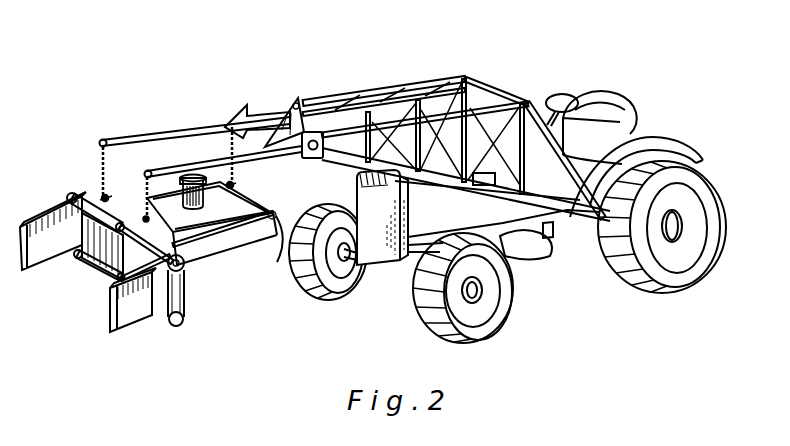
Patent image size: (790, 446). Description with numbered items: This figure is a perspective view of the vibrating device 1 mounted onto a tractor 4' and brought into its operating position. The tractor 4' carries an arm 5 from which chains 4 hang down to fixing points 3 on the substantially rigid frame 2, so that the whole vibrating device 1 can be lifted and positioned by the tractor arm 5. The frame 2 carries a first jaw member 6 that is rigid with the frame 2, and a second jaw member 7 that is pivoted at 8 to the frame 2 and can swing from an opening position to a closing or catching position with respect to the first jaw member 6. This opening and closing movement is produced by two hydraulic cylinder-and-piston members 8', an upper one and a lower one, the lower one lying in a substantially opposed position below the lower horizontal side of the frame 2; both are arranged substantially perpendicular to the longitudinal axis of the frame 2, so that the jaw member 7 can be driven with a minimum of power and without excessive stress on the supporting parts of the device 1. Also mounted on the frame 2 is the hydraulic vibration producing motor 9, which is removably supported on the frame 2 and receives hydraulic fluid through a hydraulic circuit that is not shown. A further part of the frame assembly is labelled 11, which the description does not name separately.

The vibrating device 1 is at (203, 326).
The rigid frame 2 is at (274, 212).
The fixing points 3 is at (106, 196).
The chains 4 is at (169, 172).
The tractor 4' is at (647, 254).
The arm 5 is at (333, 93).
The first jaw member 6 is at (50, 223).
The second jaw member 7 is at (137, 320).
The pivot 8 is at (225, 268).
The hydraulic cylinder-and-piston members 8' is at (106, 235).
The hydraulic vibration producing motor 9 is at (197, 176).
The platform plate 11 is at (209, 212).